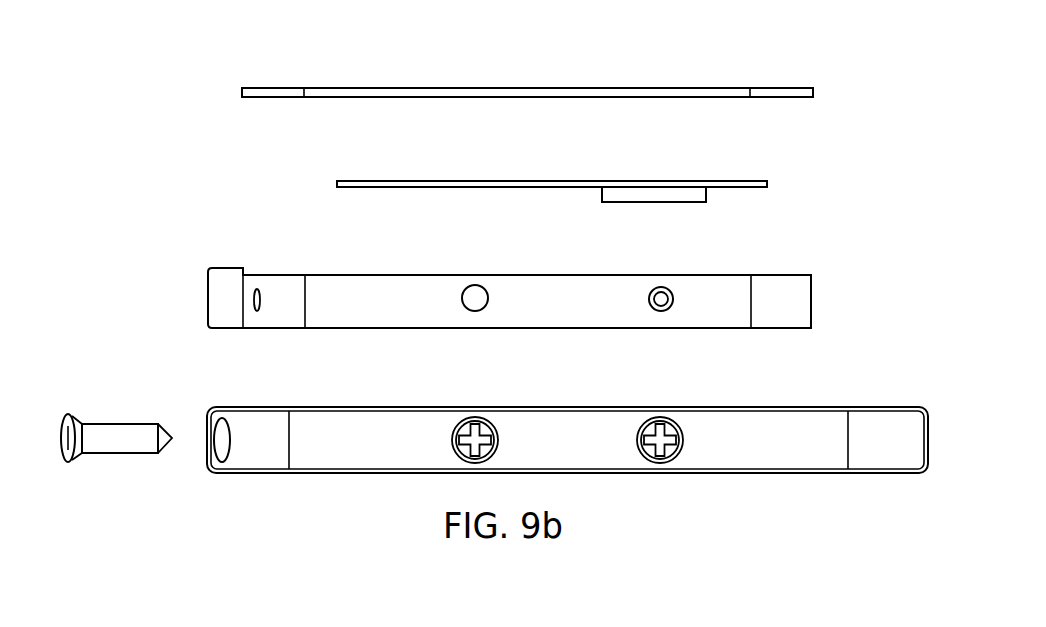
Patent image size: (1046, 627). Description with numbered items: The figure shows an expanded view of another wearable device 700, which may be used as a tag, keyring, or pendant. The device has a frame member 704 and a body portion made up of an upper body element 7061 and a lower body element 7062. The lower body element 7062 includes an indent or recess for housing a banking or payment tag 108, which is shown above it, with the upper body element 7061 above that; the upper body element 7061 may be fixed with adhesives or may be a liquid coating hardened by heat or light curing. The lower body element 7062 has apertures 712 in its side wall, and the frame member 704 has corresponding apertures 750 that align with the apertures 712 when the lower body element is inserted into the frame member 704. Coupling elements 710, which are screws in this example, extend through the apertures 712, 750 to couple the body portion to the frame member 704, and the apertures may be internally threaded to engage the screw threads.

The wearable device 700 is at (171, 102).
The upper body element 7061 is at (812, 94).
The banking or payment tag 108 is at (767, 183).
The lower body element 7062 is at (811, 301).
The apertures 712 is at (472, 294).
The frame member 704 is at (889, 407).
The apertures 750 is at (217, 423).
The coupling elements 710 is at (117, 422).